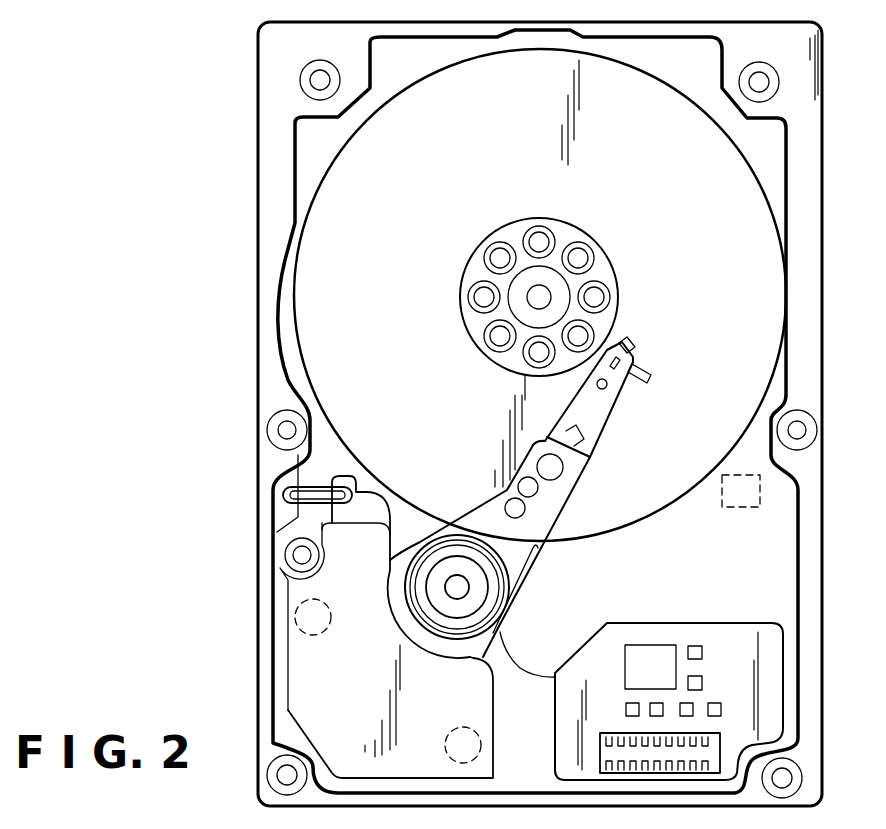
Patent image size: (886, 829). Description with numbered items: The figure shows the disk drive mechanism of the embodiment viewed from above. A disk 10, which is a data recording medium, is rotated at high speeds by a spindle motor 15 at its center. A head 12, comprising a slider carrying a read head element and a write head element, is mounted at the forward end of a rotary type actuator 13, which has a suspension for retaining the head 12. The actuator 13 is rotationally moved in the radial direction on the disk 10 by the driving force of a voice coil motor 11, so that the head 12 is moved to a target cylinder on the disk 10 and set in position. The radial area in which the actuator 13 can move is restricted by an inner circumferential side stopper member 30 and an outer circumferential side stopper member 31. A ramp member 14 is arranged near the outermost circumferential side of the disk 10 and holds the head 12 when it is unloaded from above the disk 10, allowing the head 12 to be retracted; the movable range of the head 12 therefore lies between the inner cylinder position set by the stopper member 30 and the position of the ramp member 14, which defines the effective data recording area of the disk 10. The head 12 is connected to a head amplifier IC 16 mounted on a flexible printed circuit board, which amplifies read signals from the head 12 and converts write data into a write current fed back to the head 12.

The disk 10 is at (305, 290).
The voice coil motor 11 is at (288, 705).
The head 12 is at (628, 340).
The actuator 13 is at (585, 541).
The ramp member 14 is at (760, 487).
The spindle motor 15 is at (540, 292).
The head amplifier IC 16 is at (653, 653).
The inner circumferential side stopper member 30 is at (482, 745).
The outer circumferential side stopper member 31 is at (294, 620).